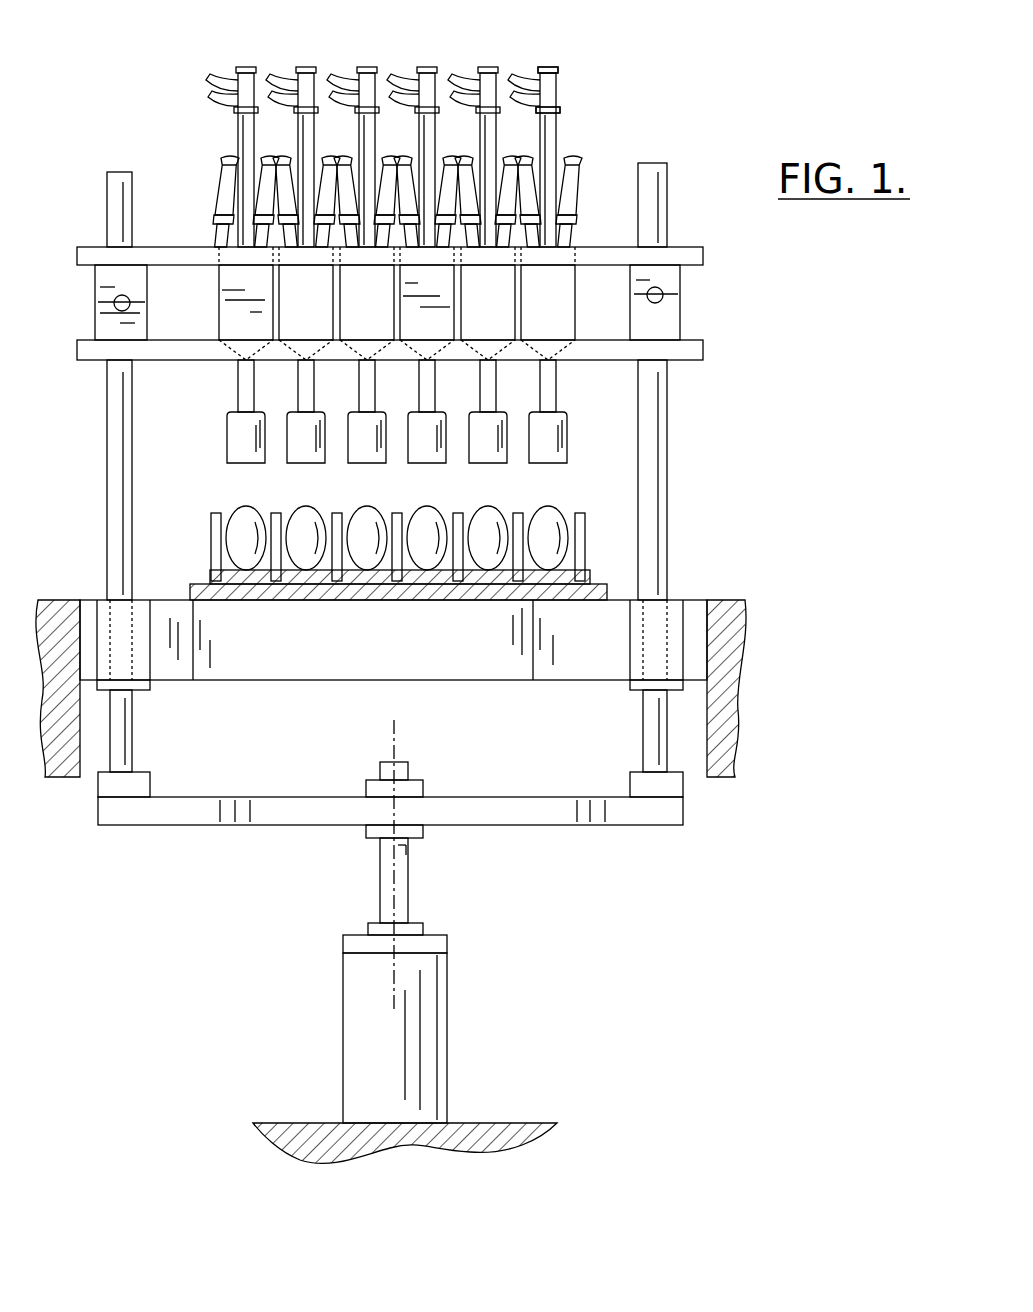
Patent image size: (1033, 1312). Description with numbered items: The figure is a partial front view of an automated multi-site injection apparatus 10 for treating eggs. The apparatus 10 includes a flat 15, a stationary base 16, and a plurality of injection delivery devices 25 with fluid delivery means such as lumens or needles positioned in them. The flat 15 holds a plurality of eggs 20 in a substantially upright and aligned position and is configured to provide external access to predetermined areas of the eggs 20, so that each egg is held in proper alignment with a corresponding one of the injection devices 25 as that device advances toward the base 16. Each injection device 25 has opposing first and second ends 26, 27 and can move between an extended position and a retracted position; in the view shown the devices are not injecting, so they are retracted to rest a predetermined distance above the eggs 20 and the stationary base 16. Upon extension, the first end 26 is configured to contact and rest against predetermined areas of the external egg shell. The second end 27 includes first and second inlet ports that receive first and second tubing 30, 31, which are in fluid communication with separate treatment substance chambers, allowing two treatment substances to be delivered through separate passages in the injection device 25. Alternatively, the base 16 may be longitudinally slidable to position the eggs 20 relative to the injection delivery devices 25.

The multi-site injection apparatus 10 is at (718, 163).
The flat 15 is at (588, 536).
The stationary base 16 is at (620, 598).
The eggs 20 is at (317, 553).
The injection delivery devices 25 is at (303, 282).
The first end 26 is at (247, 462).
The second end 27 is at (242, 90).
The first tubing 30 is at (556, 70).
The second tubing 31 is at (558, 104).